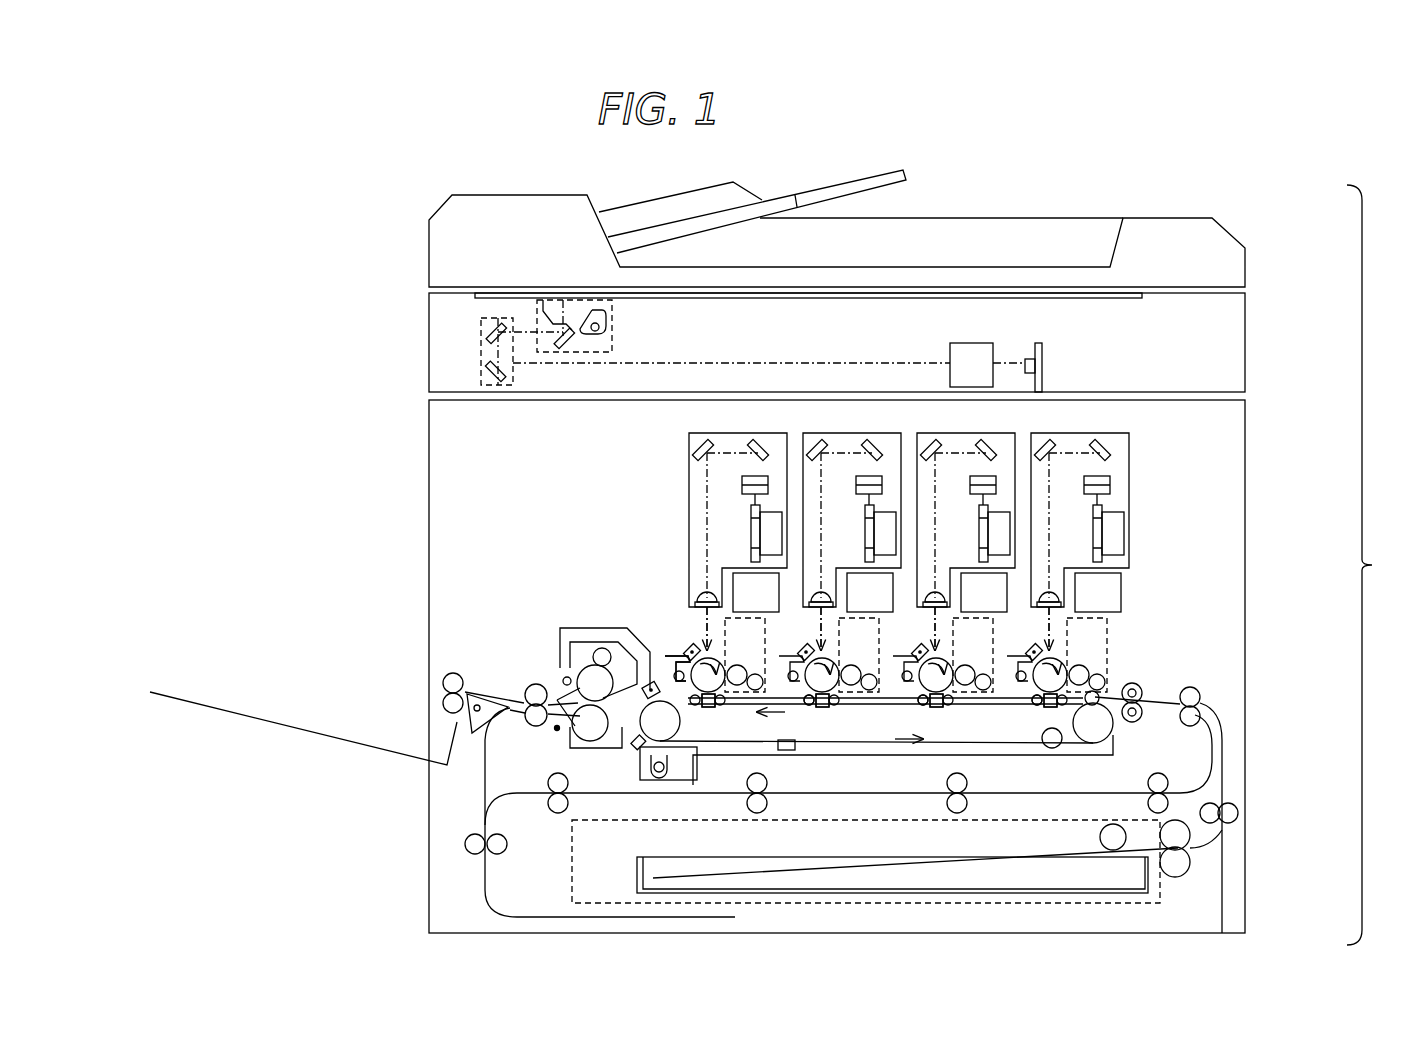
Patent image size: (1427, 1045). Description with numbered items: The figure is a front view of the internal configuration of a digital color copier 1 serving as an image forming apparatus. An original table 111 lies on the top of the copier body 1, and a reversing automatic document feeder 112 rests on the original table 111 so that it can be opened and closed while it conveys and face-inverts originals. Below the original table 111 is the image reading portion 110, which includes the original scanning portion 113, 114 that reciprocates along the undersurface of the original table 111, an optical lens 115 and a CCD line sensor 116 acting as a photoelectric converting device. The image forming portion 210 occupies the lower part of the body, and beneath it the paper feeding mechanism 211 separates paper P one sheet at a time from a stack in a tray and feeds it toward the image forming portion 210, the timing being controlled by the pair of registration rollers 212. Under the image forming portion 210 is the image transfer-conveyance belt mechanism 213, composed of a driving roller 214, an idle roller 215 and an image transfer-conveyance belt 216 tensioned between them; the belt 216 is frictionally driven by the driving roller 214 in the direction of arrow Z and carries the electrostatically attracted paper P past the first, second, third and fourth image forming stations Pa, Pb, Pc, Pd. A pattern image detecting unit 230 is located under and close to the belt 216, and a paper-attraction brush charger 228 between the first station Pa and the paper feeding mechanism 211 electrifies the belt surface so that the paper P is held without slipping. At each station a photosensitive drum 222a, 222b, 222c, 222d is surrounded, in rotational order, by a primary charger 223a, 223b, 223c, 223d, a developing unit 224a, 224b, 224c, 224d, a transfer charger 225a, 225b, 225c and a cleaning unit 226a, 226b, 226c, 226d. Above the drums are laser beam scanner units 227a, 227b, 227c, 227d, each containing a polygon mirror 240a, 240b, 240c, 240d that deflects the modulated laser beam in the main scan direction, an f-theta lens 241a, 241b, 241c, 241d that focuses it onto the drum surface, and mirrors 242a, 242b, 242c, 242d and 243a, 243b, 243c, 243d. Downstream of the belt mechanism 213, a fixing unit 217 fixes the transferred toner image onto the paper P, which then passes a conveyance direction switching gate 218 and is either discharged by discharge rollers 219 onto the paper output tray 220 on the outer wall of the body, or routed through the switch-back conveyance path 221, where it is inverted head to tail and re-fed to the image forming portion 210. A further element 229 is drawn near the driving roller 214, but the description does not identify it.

The digital color copier 1 is at (1376, 565).
The image reading portion 110 is at (1175, 345).
The original table 111 is at (970, 297).
The reversing automatic document feeder 112 is at (1175, 267).
The original scanning portion 113 is at (537, 304).
The original scanning portion 114 is at (481, 350).
The optical lens 115 is at (970, 343).
The CCD line sensor 116 is at (1042, 366).
The image forming portion 210 is at (1200, 606).
The paper feeding mechanism 211 is at (1207, 870).
The registration rollers 212 is at (1140, 683).
The image transfer-conveyance belt mechanism 213 is at (922, 750).
The driving roller 214 is at (642, 748).
The idle roller 215 is at (1096, 735).
The image transfer-conveyance belt 216 is at (865, 756).
The fixing unit 217 is at (598, 628).
The conveyance direction switching gate 218 is at (505, 693).
The discharge rollers 219 is at (452, 672).
The paper output tray 220 is at (236, 703).
The switch-back conveyance path 221 is at (487, 874).
The photosensitive drum 222a is at (1087, 655).
The photosensitive drum 222b is at (973, 655).
The photosensitive drum 222c is at (859, 655).
The photosensitive drum 222d is at (745, 655).
The primary charger 223a is at (1020, 640).
The primary charger 223b is at (906, 640).
The primary charger 223c is at (792, 640).
The primary charger 223d is at (689, 647).
The developing unit 224a is at (1098, 592).
The developing unit 224b is at (984, 592).
The developing unit 224c is at (870, 592).
The developing unit 224d is at (752, 612).
The transfer charger 225a is at (1050, 708).
The transfer charger 225b is at (944, 708).
The transfer charger 225c is at (716, 708).
The cleaning unit 226a is at (1032, 703).
The cleaning unit 226b is at (918, 703).
The cleaning unit 226c is at (803, 705).
The cleaning unit 226d is at (668, 652).
The laser beam scanner unit 227a is at (1080, 506).
The laser beam scanner unit 227b is at (966, 506).
The laser beam scanner unit 227c is at (852, 506).
The laser beam scanner unit 227d is at (712, 432).
The paper-attraction brush charger 228 is at (1100, 690).
The belt cleaning blade 229 is at (650, 682).
The pattern image detecting unit 230 is at (788, 752).
The polygon mirror 240a is at (1085, 533).
The polygon mirror 240b is at (971, 533).
The polygon mirror 240c is at (857, 533).
The polygon mirror 240d is at (752, 530).
The f-theta lens 241a is at (1078, 495).
The f-theta lens 241b is at (964, 495).
The f-theta lens 241c is at (850, 495).
The f-theta lens 241d is at (742, 491).
The mirror 242a is at (1114, 436).
The mirror 242b is at (1001, 436).
The mirror 242c is at (886, 436).
The mirror 242d is at (763, 441).
The mirror 243a is at (1065, 458).
The mirror 243b is at (951, 458).
The mirror 243c is at (836, 458).
The mirror 243d is at (708, 453).
The paper P is at (990, 870).
The first image forming station Pa is at (1045, 630).
The second image forming station Pb is at (930, 630).
The third image forming station Pc is at (817, 630).
The fourth image forming station Pd is at (703, 623).
The arrow Z is at (840, 725).